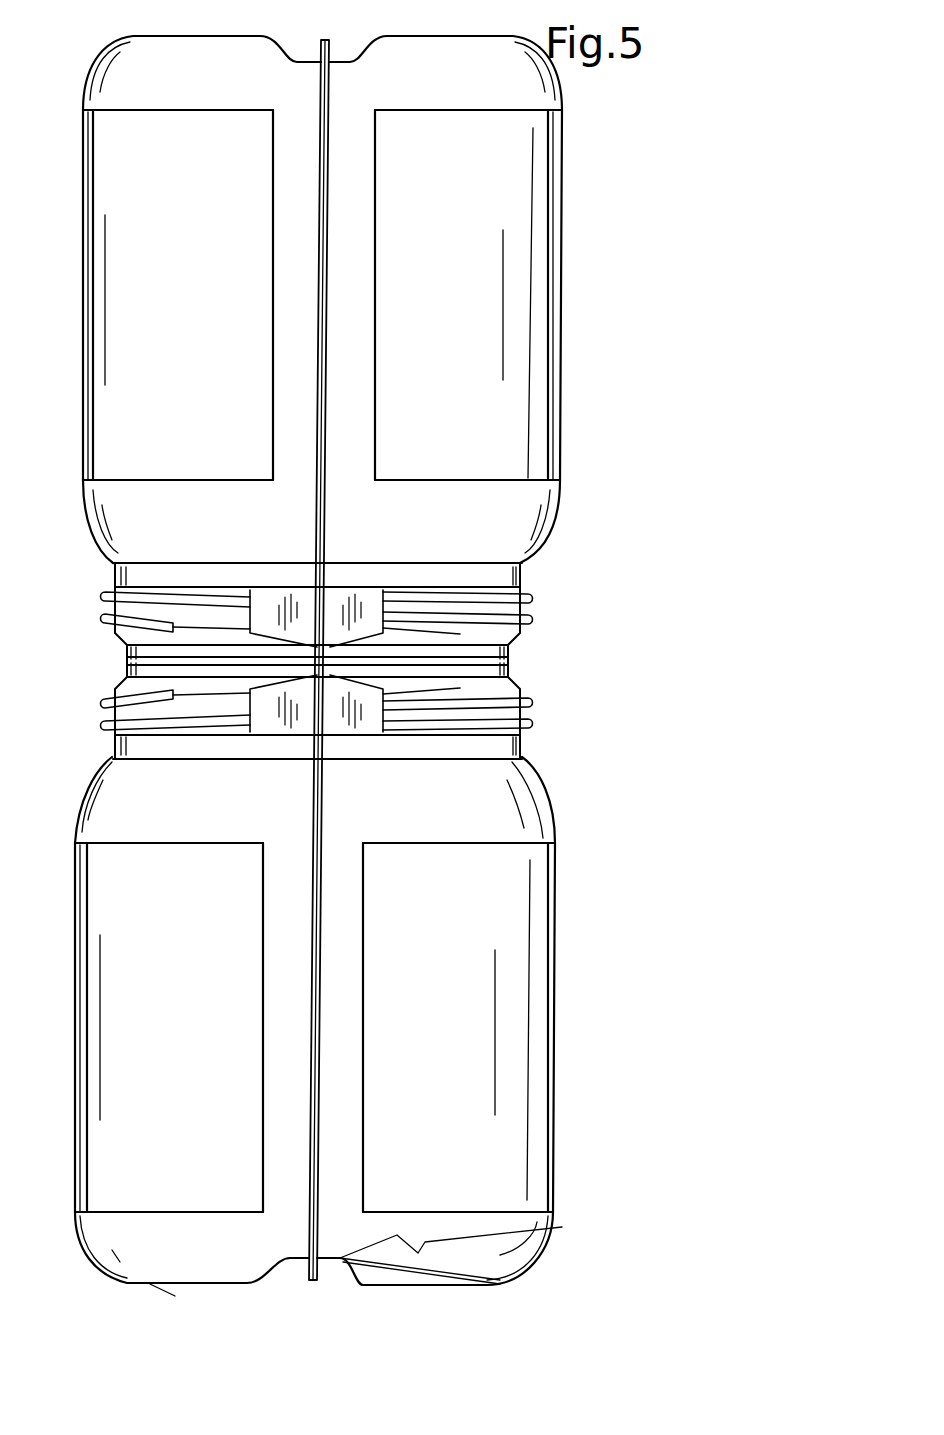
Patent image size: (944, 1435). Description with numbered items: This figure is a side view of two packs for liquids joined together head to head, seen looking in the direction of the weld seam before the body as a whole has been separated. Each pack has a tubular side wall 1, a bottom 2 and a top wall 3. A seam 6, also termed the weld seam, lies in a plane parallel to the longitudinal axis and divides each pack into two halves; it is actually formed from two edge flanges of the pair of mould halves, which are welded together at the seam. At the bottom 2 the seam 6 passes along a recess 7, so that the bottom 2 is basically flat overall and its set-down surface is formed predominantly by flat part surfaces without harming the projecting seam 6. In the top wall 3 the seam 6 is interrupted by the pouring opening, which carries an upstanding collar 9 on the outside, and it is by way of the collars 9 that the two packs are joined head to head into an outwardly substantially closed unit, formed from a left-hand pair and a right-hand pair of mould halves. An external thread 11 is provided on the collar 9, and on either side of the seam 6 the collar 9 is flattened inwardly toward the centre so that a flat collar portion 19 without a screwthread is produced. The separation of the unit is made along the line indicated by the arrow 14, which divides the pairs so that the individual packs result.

The side wall 1 is at (538, 240).
The bottom 2 is at (125, 1280).
The top wall 3 is at (525, 760).
The seam 6 is at (332, 52).
The recess 7 is at (300, 58).
The collar 9 is at (530, 598).
The external thread 11 is at (103, 612).
The arrow 14 is at (95, 660).
The flat collar portion 19 is at (360, 603).